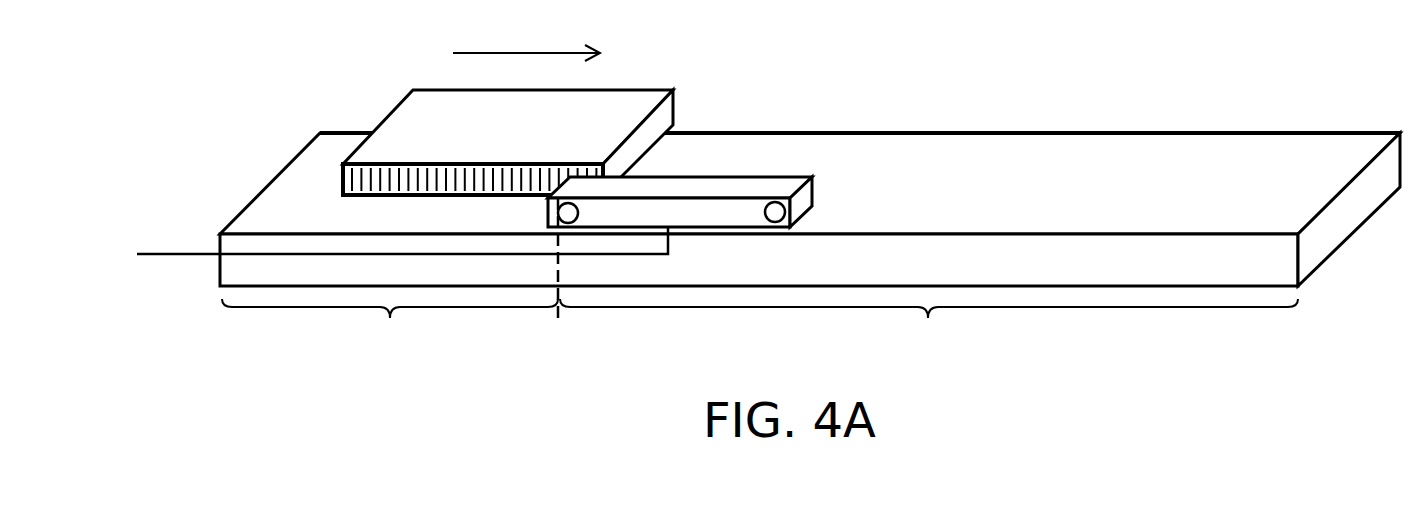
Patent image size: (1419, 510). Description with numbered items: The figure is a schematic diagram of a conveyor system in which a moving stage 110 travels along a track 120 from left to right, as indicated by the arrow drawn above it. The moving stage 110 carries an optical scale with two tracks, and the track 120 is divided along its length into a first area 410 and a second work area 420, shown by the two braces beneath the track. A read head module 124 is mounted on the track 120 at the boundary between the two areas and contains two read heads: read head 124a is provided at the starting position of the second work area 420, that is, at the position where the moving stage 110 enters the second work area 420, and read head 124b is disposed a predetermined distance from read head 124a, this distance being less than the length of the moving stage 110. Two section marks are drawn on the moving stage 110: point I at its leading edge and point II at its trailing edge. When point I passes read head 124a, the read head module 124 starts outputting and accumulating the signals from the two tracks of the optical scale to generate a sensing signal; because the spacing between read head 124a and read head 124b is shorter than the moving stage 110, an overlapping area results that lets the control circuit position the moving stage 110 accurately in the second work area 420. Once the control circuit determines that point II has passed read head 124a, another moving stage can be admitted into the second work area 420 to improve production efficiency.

The moving stage 110 is at (422, 118).
The track 120 is at (968, 172).
The read head module 124 is at (615, 122).
The read head 124a is at (568, 190).
The read head 124b is at (783, 188).
The first work area 410 is at (390, 328).
The second work area 420 is at (929, 328).
The point I is at (603, 163).
The point II is at (343, 163).